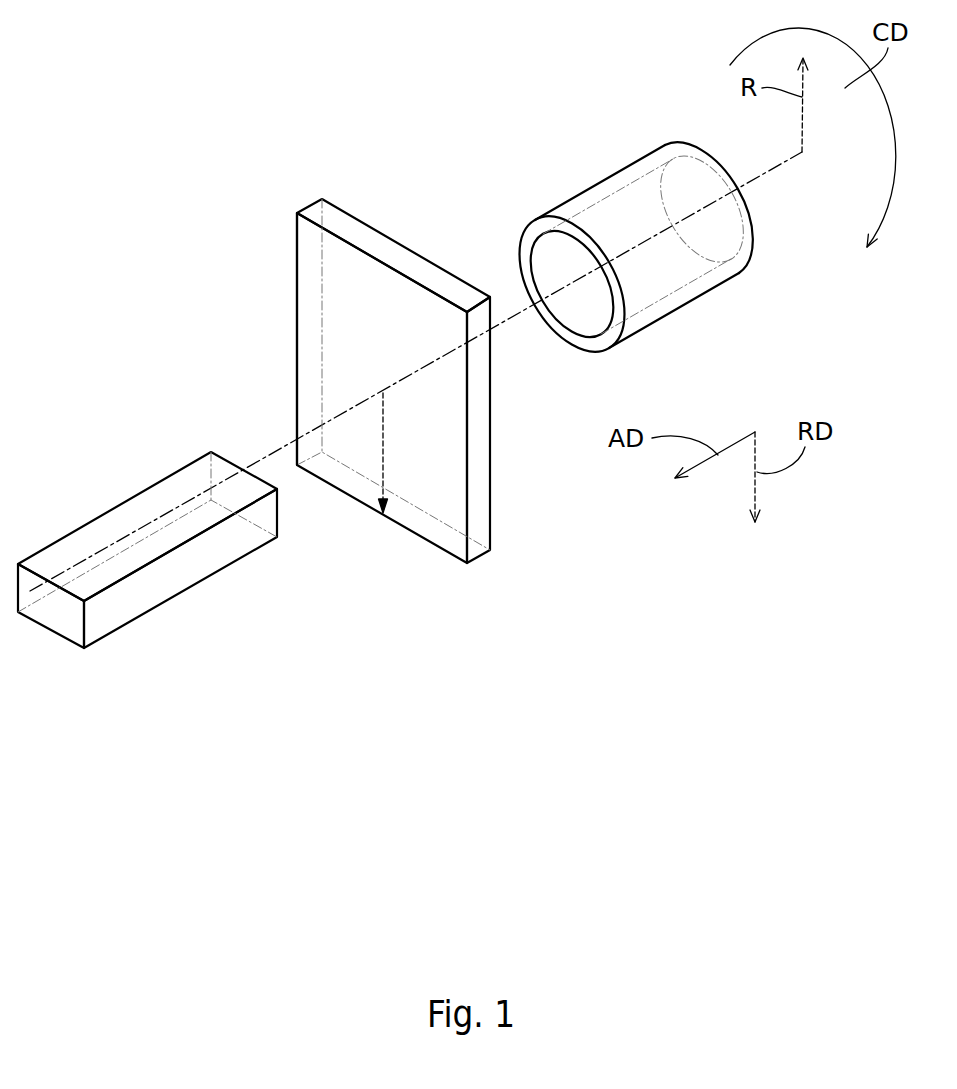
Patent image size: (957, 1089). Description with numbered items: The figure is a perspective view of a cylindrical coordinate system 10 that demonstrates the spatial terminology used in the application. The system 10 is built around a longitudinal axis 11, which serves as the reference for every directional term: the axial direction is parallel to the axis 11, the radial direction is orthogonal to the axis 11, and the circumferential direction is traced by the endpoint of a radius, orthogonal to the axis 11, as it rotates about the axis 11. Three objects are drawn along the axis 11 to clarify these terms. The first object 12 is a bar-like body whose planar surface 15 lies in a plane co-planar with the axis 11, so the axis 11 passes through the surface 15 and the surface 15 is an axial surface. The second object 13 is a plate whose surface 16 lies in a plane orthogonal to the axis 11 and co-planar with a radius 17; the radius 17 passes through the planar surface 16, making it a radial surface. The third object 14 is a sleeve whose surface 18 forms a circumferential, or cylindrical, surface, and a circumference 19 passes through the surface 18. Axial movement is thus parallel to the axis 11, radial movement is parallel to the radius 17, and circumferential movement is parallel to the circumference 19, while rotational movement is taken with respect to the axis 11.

The cylindrical coordinate system 10 is at (239, 246).
The longitudinal axis 11 is at (733, 183).
The object 12 is at (112, 637).
The object 13 is at (390, 404).
The object 14 is at (591, 249).
The axial surface 15 is at (107, 530).
The radial surface 16 is at (313, 337).
The radius 17 is at (383, 443).
The circumferential surface 18 is at (600, 183).
The circumference 19 is at (520, 243).